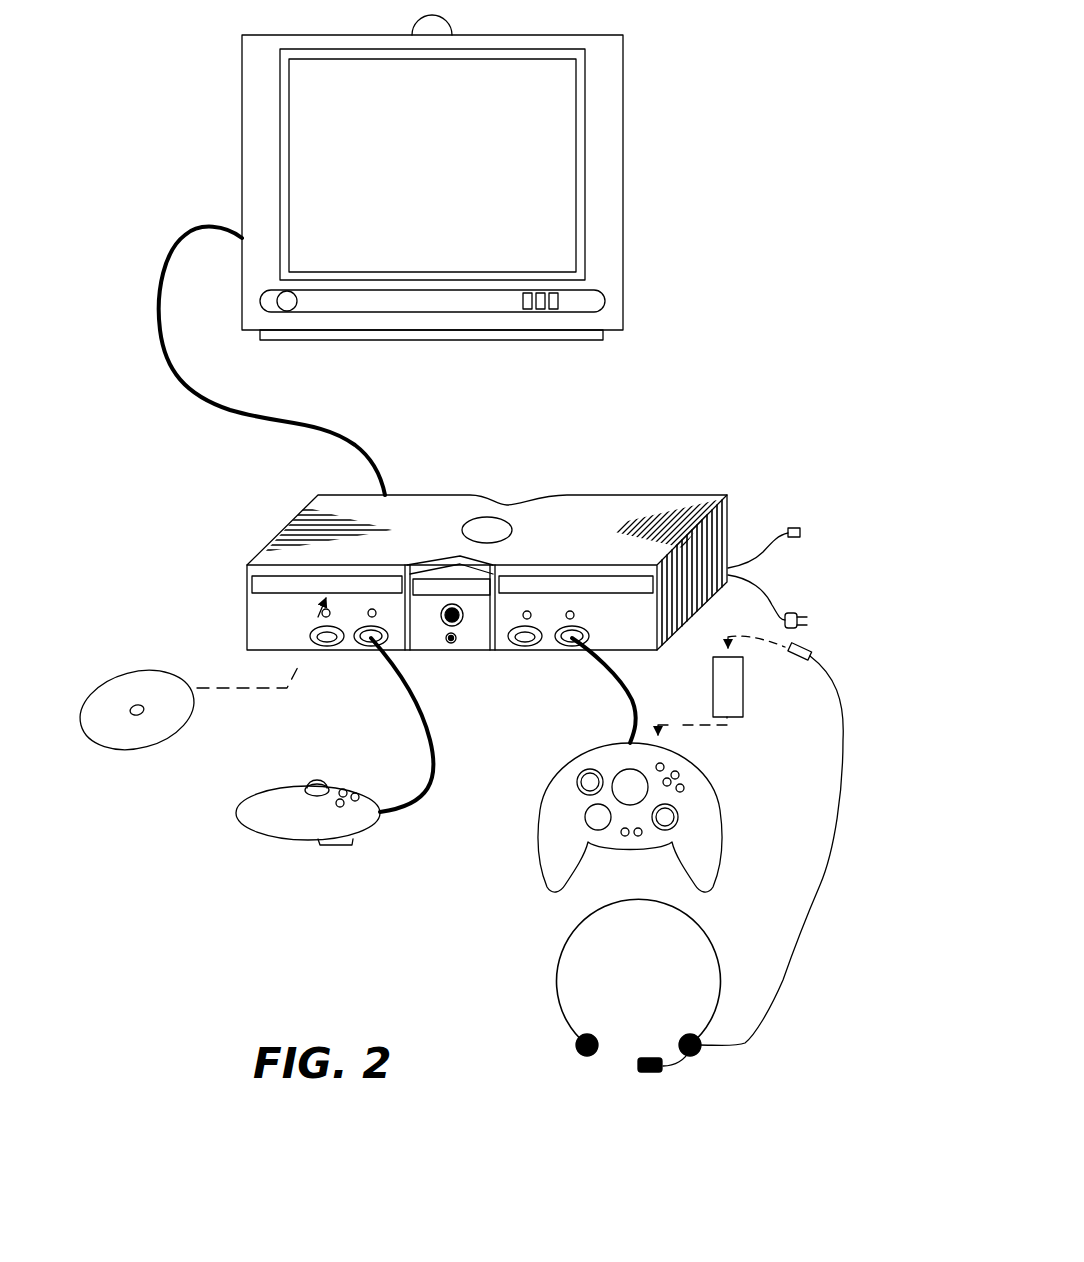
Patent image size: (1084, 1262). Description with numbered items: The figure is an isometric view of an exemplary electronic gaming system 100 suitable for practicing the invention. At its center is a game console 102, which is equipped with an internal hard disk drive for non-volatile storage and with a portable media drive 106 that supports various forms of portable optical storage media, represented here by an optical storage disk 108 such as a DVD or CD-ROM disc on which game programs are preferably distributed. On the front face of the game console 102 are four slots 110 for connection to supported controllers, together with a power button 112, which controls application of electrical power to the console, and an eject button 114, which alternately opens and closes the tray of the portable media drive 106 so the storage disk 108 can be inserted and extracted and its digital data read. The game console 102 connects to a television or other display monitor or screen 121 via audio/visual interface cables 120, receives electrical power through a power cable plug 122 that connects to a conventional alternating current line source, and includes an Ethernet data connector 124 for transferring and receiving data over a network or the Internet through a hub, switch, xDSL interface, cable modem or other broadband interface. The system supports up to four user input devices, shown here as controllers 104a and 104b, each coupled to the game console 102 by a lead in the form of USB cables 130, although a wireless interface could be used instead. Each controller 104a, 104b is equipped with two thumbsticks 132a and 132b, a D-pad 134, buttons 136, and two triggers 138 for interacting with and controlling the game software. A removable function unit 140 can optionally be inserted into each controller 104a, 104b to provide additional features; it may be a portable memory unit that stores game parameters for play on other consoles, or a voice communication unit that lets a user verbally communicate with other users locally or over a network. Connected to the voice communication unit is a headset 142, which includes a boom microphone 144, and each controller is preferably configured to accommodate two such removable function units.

The electronic gaming system 100 is at (626, 415).
The game console 102 is at (353, 492).
The controller 104a is at (310, 840).
The controller 104b is at (548, 882).
The portable media drive 106 is at (262, 583).
The optical storage disk 108 is at (150, 748).
The slots 110 is at (368, 645).
The power button 112 is at (452, 644).
The eject button 114 is at (452, 604).
The audio/visual interface cables 120 is at (372, 460).
The television or display monitor or screen 121 is at (625, 142).
The power cable plug 122 is at (802, 620).
The Ethernet data connector 124 is at (765, 552).
The USB cables 130 is at (430, 734).
The thumbstick 132a is at (575, 782).
The thumbstick 132b is at (315, 783).
The D-pad 134 is at (583, 817).
The buttons 136 is at (677, 775).
The triggers 138 is at (352, 840).
The removable function unit 140 is at (745, 714).
The headset 142 is at (555, 1005).
The boom microphone 144 is at (650, 1073).